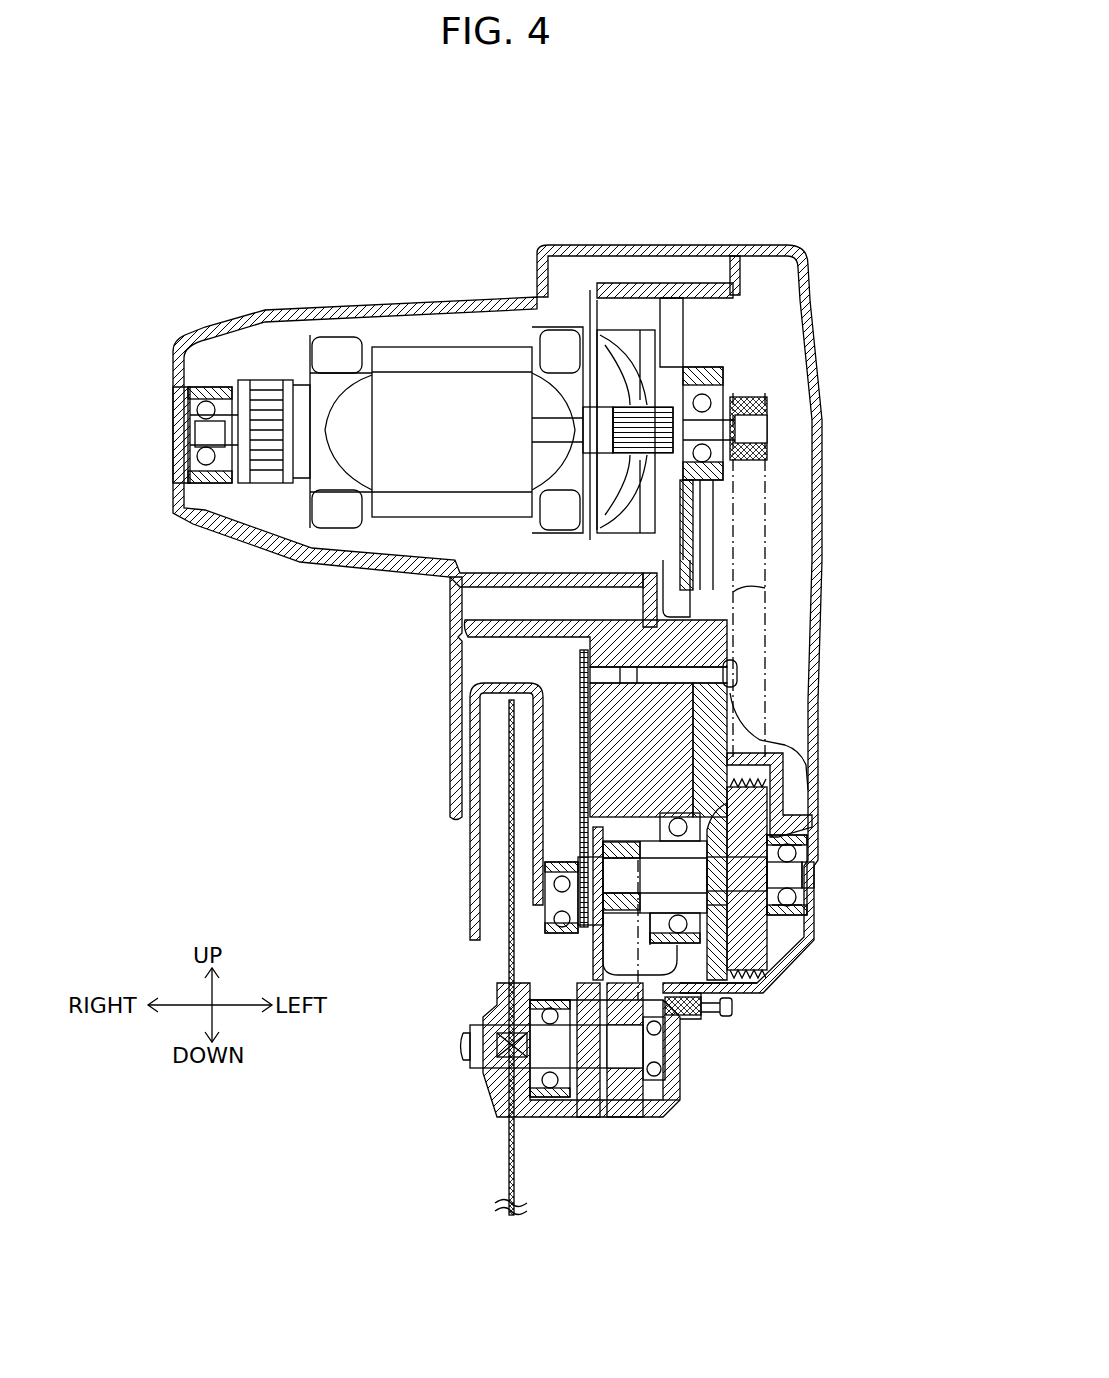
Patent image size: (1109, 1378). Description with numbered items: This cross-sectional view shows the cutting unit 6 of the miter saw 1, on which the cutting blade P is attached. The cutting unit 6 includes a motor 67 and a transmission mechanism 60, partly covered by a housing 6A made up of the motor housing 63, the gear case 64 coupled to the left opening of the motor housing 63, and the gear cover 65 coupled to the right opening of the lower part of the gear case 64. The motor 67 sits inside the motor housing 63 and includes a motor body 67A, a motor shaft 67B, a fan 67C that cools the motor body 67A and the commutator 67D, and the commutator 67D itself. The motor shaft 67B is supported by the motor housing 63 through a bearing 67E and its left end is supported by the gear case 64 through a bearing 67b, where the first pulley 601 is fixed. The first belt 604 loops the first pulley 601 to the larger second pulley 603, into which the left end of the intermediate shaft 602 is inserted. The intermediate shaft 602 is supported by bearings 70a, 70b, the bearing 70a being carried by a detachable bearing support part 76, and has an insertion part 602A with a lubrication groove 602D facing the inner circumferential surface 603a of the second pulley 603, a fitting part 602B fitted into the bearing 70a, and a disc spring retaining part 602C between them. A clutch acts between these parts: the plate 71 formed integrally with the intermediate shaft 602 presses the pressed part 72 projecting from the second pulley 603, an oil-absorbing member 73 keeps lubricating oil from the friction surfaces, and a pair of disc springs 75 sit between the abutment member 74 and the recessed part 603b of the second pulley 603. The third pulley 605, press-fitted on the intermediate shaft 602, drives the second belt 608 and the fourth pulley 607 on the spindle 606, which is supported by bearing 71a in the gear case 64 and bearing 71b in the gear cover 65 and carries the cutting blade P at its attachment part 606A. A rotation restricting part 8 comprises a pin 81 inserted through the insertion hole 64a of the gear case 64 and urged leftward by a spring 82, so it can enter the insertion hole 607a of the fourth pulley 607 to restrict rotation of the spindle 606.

The miter saw 1 is at (859, 146).
The cutting unit 6 is at (746, 200).
The housing 6A is at (822, 510).
The rotation restricting part 8 is at (798, 1066).
The transmission mechanism 60 is at (790, 372).
The motor housing 63 is at (305, 565).
The gear case 64 is at (820, 395).
The insertion hole 64a is at (765, 990).
The gear cover 65 is at (578, 1115).
The motor 67 is at (510, 372).
The motor body 67A is at (433, 418).
The motor shaft 67B is at (598, 432).
The fan 67C is at (615, 343).
The commutator 67D is at (265, 420).
The bearing 67E is at (203, 457).
The bearing 67b is at (700, 402).
The first pulley 601 is at (768, 447).
The intermediate shaft 602 is at (625, 880).
The insertion part 602A is at (578, 905).
The fitting part 602B is at (780, 878).
The disc spring retaining part 602C is at (807, 887).
The lubrication groove 602D is at (812, 870).
The second pulley 603 is at (760, 955).
The inner circumferential surface 603a is at (618, 848).
The recessed part 603b is at (793, 923).
The first belt 604 is at (750, 590).
The third pulley 605 is at (560, 920).
The spindle 606 is at (570, 1050).
The attachment part 606A is at (475, 1050).
The fourth pulley 607 is at (622, 1085).
The insertion hole 607a is at (670, 1048).
The second belt 608 is at (623, 953).
The bearing 70a is at (805, 908).
The bearing 70b is at (668, 825).
The plate 71 is at (455, 745).
The bearing 71a is at (660, 1085).
The bearing 71b is at (505, 1092).
The pressed part 72 is at (730, 835).
The oil-absorbing member 73 is at (740, 830).
The abutment member 74 is at (802, 843).
The pair of disc springs 75 is at (785, 838).
The bearing support part 76 is at (733, 733).
The pin 81 is at (735, 1013).
The spring 82 is at (703, 1007).
The cutting blade P is at (505, 1170).